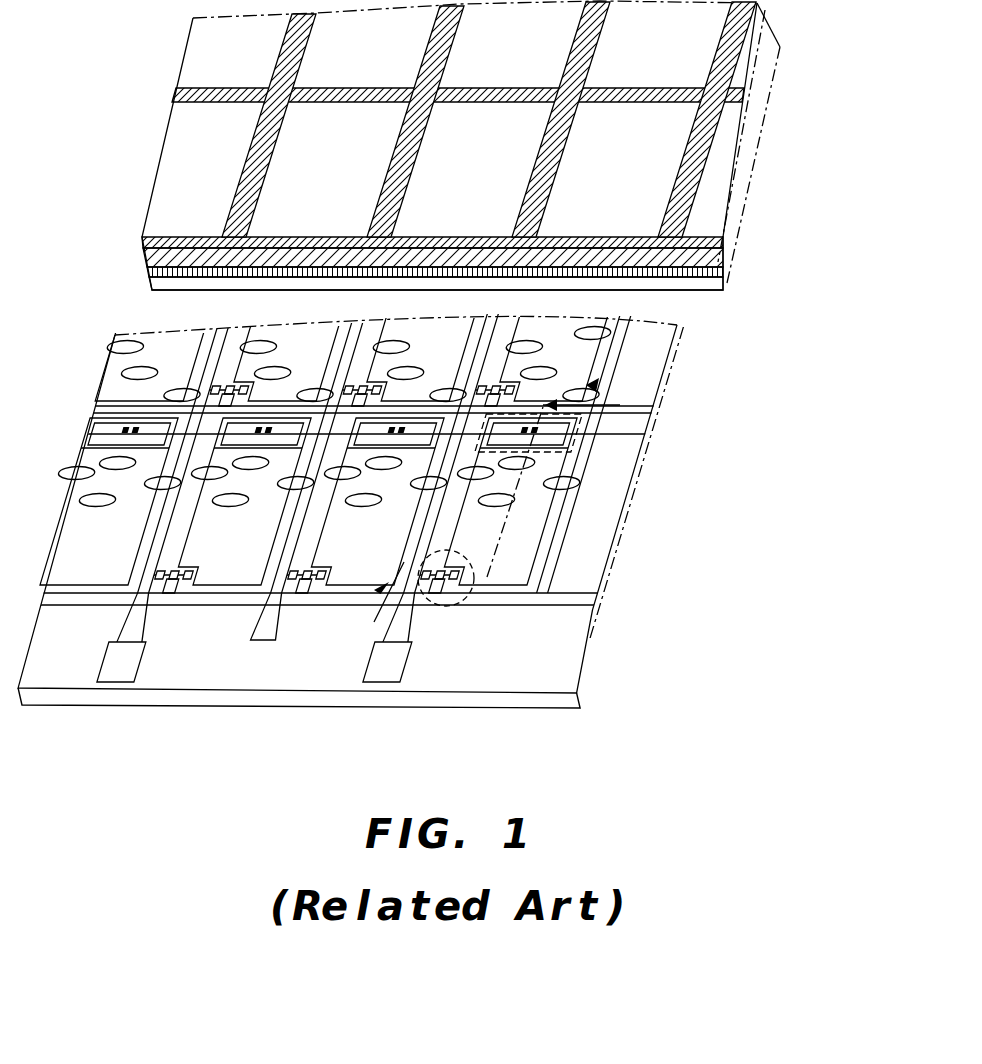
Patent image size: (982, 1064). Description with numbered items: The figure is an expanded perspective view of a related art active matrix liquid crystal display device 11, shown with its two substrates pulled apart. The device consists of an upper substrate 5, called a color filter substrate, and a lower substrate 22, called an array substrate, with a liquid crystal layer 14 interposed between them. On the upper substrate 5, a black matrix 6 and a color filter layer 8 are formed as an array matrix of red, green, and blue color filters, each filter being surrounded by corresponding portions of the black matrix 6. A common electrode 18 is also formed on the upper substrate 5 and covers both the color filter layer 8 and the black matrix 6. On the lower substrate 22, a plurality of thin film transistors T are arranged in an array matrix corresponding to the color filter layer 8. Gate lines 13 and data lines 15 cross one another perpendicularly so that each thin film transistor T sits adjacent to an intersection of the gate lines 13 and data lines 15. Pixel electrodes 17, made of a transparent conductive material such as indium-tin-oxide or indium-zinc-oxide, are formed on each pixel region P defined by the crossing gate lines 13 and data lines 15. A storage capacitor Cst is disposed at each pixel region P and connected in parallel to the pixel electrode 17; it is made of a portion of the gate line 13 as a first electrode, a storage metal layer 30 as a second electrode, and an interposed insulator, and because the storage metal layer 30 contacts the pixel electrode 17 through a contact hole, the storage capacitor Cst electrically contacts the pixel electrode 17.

The upper substrate 5 is at (140, 257).
The black matrix 6 is at (760, 98).
The color filter layer 8 is at (700, 57).
The common electrode 18 is at (712, 287).
The lower substrate 22 is at (538, 700).
The LCD device 11 is at (750, 559).
The gate lines 13 is at (552, 603).
The data lines 15 is at (392, 630).
The pixel electrodes 17 is at (545, 567).
The storage metal layer 30 is at (590, 440).
The storage capacitor Cst is at (593, 452).
The liquid crystal layer 14 is at (610, 366).
The thin film transistors T is at (462, 604).
The pixel region P is at (595, 522).